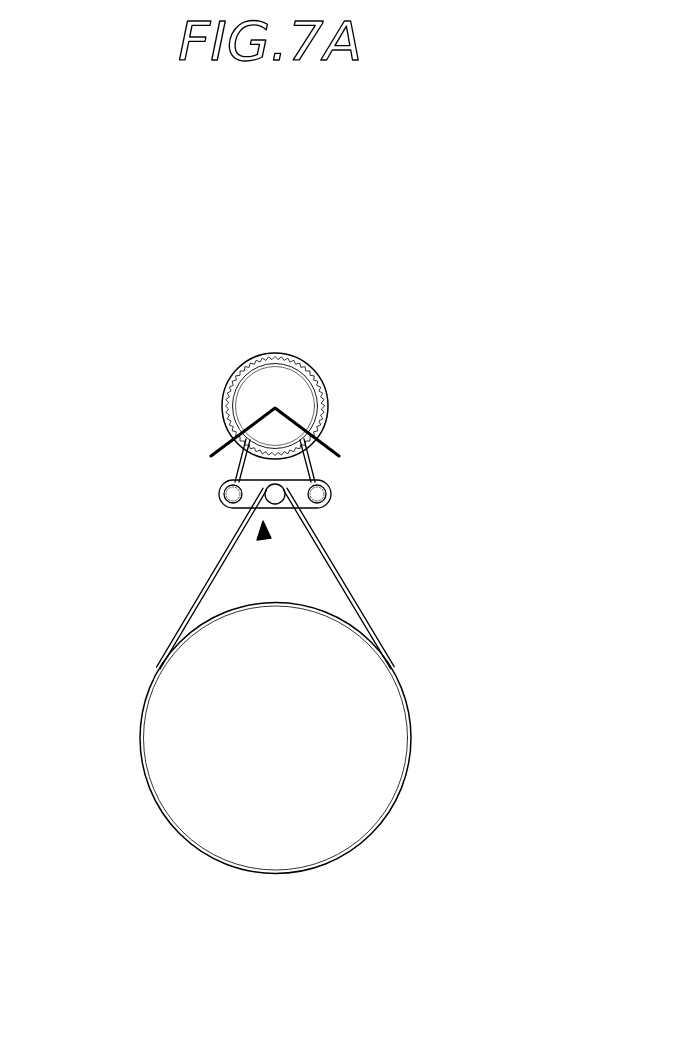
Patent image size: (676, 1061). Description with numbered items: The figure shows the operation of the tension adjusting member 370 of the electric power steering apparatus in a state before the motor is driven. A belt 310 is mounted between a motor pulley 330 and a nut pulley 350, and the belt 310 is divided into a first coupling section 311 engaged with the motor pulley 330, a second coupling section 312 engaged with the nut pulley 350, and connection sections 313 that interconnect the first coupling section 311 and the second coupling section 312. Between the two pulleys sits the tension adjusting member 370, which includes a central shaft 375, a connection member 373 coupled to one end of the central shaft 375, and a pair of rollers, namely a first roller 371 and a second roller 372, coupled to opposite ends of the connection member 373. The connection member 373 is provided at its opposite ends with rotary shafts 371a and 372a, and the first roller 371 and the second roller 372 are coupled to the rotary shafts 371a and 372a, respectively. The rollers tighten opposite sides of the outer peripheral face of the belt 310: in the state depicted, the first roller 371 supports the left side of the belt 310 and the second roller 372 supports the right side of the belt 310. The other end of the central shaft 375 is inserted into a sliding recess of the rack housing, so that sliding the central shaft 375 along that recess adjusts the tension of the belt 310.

The belt 310 is at (230, 649).
The first coupling section 311 is at (227, 431).
The second coupling section 312 is at (147, 697).
The connection sections 313 is at (220, 572).
The motor pulley 330 is at (318, 391).
The nut pulley 350 is at (411, 706).
The tension adjusting member 370 is at (332, 535).
The first roller 371 is at (238, 494).
The rotary shaft 371a is at (245, 483).
The second roller 372 is at (318, 495).
The rotary shaft 372a is at (326, 502).
The connection member 373 is at (335, 511).
The central shaft 375 is at (265, 539).